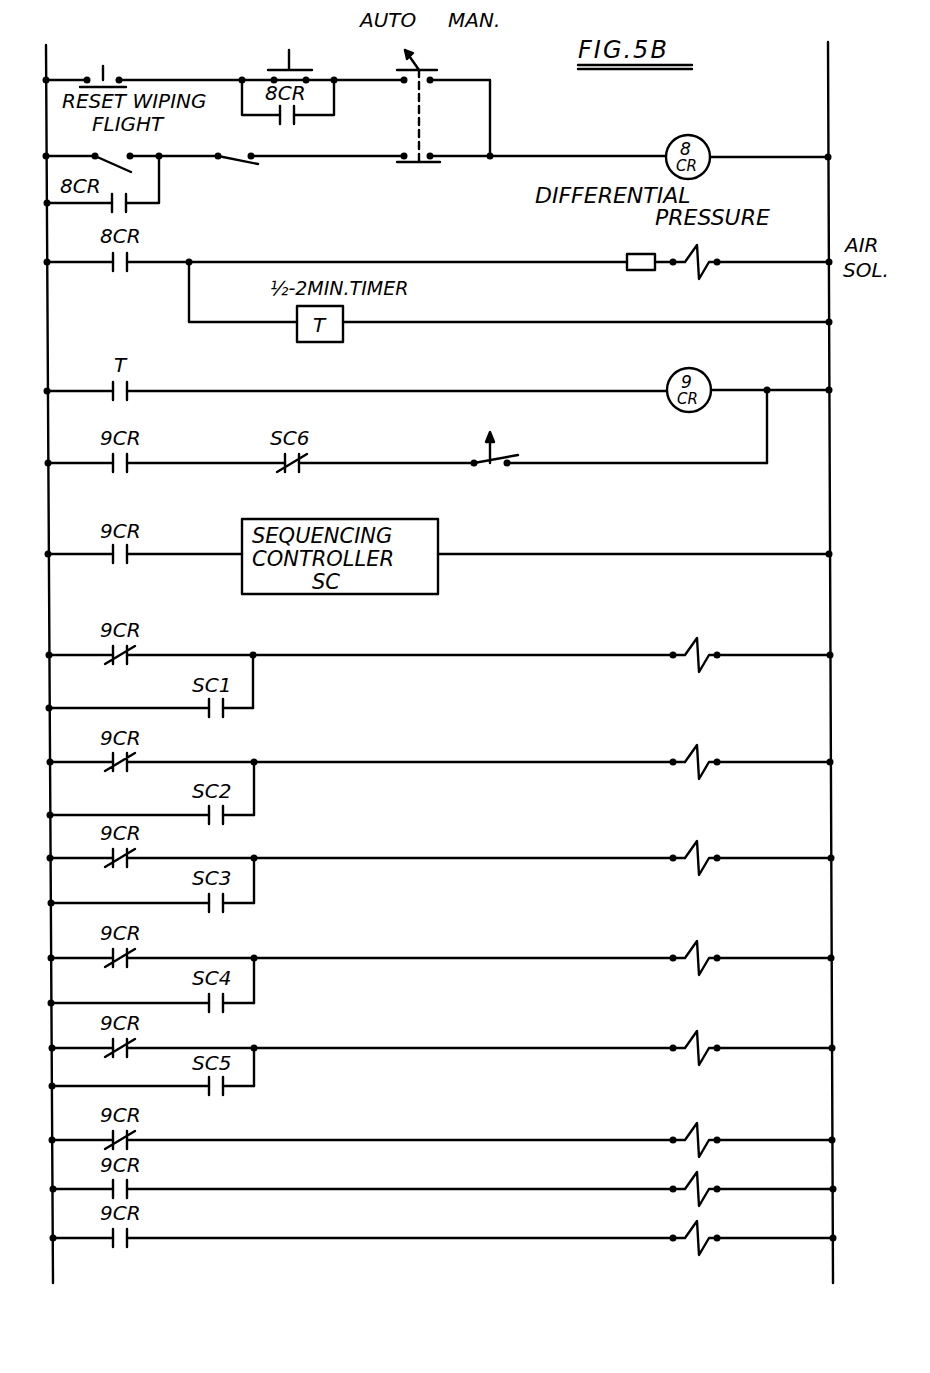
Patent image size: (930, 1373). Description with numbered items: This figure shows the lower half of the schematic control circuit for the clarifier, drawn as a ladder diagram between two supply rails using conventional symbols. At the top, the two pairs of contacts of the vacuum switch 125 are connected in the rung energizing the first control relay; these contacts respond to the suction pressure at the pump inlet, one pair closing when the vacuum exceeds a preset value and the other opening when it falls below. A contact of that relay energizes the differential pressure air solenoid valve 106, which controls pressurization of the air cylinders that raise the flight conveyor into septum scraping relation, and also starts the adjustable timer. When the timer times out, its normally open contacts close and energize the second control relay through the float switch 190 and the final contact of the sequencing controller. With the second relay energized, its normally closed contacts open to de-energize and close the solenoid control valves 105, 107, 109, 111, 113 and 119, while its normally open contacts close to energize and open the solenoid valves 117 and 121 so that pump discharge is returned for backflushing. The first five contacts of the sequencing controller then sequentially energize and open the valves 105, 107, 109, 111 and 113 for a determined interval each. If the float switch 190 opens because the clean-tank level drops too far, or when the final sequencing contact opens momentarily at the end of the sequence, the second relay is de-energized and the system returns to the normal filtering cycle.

The solenoid control valve 105 is at (700, 648).
The solenoid valve 106 is at (697, 254).
The solenoid control valve 107 is at (705, 752).
The solenoid control valve 109 is at (705, 848).
The solenoid control valve 111 is at (705, 948).
The solenoid control valve 113 is at (705, 1038).
The solenoid valve 117 is at (705, 1179).
The solenoid control valve 119 is at (705, 1130).
The solenoid valve 121 is at (705, 1228).
The vacuum switch 125 is at (126, 136).
The float switch 190 is at (490, 438).